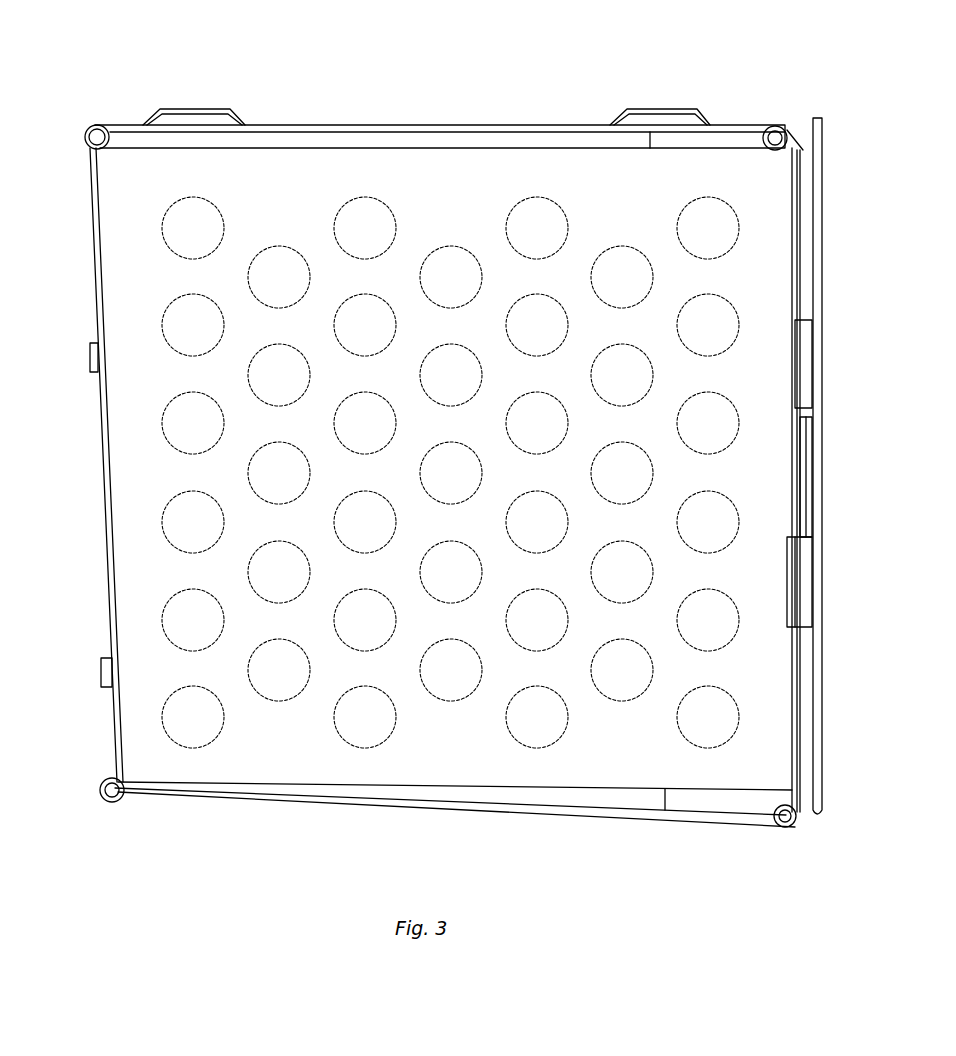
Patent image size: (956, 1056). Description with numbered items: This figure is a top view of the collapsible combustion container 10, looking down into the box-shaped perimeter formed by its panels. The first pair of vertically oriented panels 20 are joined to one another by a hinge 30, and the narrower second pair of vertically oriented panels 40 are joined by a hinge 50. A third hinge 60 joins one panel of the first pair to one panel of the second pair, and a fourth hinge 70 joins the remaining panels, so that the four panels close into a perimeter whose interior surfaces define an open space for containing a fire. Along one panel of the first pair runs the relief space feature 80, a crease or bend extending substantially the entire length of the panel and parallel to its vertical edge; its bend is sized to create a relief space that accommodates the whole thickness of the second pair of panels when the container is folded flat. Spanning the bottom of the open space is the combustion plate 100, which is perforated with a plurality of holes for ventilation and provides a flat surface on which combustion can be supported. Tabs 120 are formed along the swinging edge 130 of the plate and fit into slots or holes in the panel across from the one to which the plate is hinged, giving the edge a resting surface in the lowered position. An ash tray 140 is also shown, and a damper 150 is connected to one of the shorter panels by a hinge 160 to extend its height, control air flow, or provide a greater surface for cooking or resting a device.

The combustion container 10 is at (362, 88).
The first pair of vertically oriented panels 20 is at (510, 125).
The hinge 30 is at (786, 125).
The second pair of vertically oriented panels 40 is at (557, 812).
The hinge 50 is at (108, 802).
The third hinge 60 is at (797, 830).
The fourth hinge 70 is at (95, 125).
The relief space feature 80 is at (815, 125).
The combustion plate 100 is at (437, 172).
The tabs 120 is at (90, 360).
The swinging edge 130 is at (105, 492).
The ash tray 140 is at (203, 120).
The damper 150 is at (823, 265).
The hinge 160 is at (815, 378).